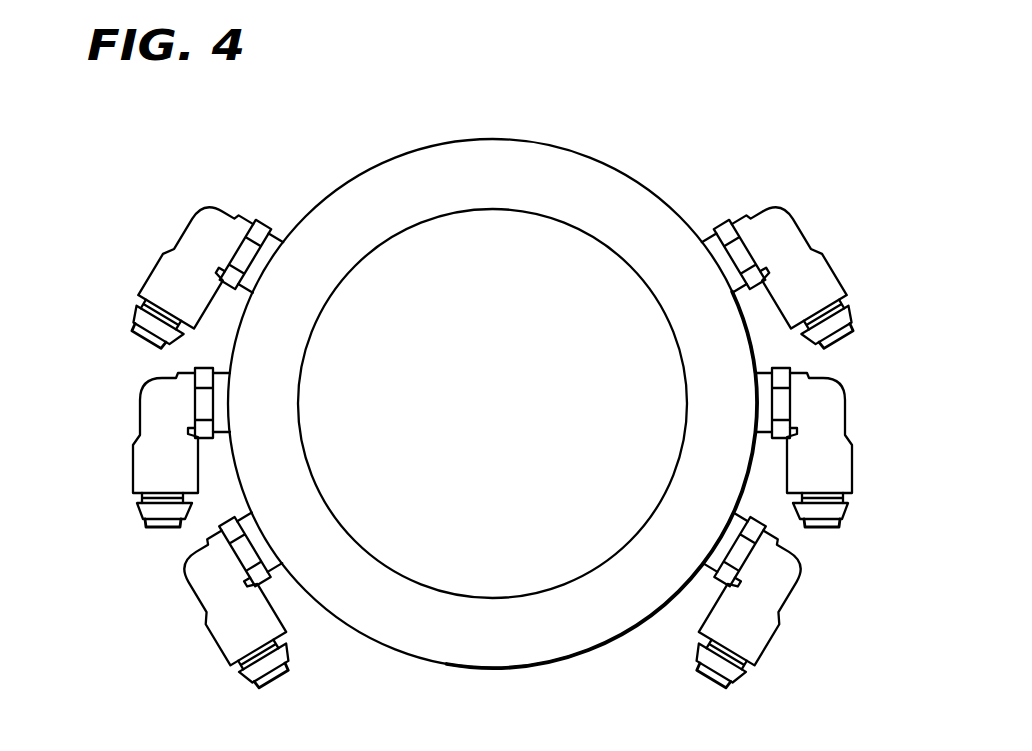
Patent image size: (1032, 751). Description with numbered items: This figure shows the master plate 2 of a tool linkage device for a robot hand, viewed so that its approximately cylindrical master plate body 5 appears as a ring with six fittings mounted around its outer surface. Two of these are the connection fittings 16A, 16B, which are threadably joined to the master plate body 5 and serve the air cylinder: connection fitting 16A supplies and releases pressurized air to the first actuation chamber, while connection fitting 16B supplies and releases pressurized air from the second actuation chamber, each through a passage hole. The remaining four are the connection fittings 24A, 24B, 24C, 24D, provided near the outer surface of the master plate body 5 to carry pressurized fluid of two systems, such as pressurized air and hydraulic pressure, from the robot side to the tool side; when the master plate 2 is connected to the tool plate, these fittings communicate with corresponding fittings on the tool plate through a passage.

The master plate 2 is at (358, 165).
The master plate body 5 is at (521, 142).
The connection fitting 16A is at (148, 416).
The connection fitting 16B is at (835, 410).
The connection fitting 24A is at (205, 212).
The connection fitting 24B is at (798, 218).
The connection fitting 24C is at (787, 573).
The connection fitting 24D is at (205, 594).